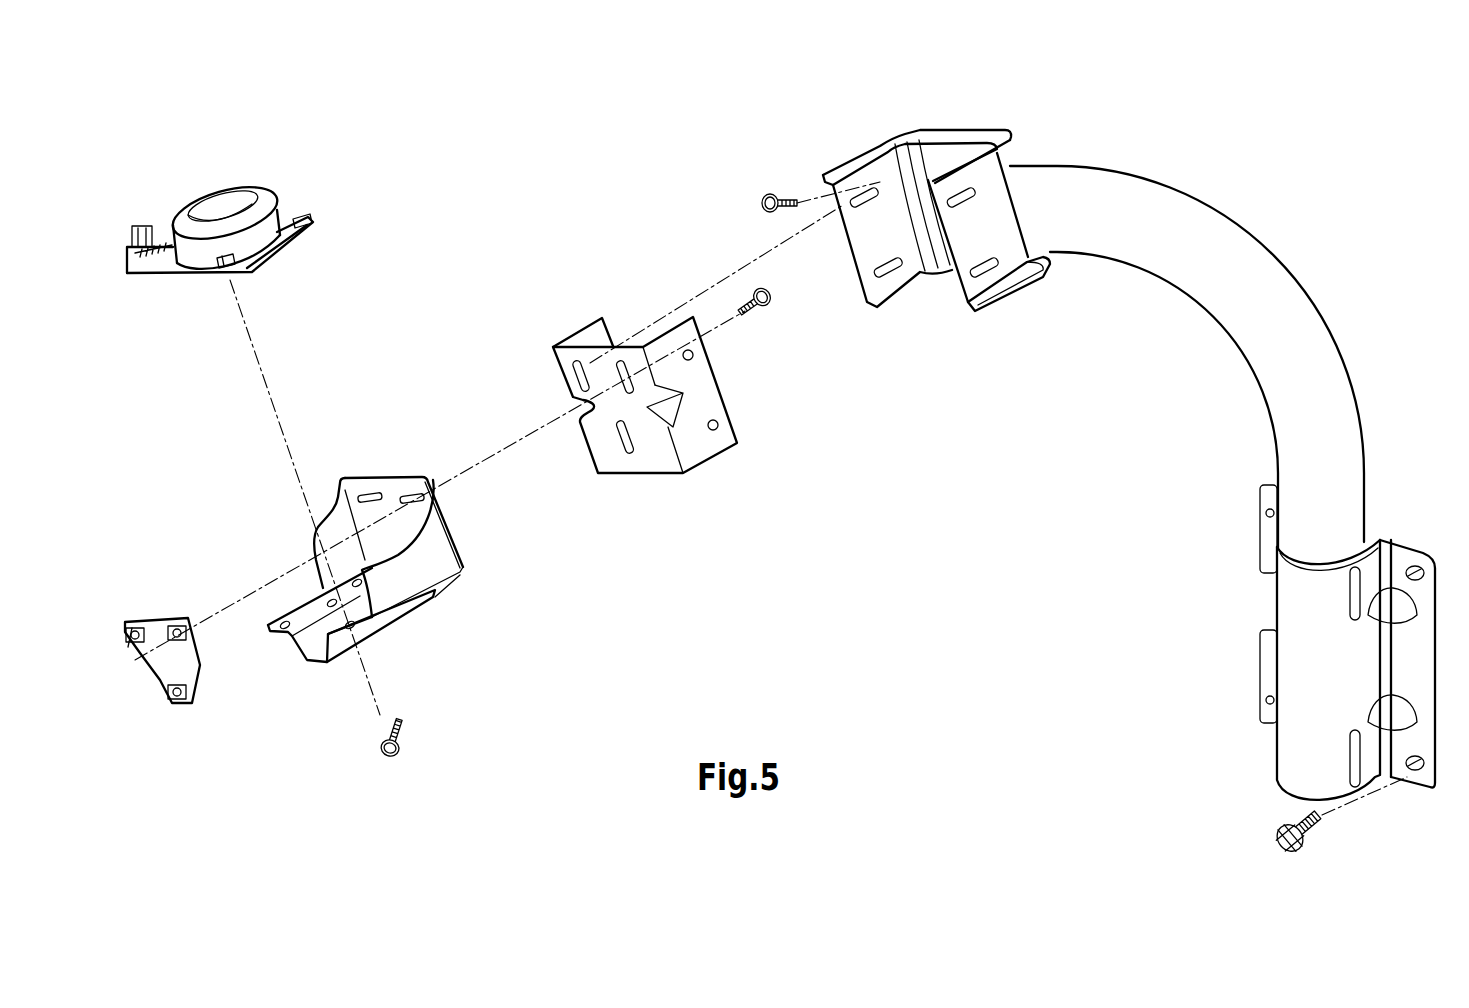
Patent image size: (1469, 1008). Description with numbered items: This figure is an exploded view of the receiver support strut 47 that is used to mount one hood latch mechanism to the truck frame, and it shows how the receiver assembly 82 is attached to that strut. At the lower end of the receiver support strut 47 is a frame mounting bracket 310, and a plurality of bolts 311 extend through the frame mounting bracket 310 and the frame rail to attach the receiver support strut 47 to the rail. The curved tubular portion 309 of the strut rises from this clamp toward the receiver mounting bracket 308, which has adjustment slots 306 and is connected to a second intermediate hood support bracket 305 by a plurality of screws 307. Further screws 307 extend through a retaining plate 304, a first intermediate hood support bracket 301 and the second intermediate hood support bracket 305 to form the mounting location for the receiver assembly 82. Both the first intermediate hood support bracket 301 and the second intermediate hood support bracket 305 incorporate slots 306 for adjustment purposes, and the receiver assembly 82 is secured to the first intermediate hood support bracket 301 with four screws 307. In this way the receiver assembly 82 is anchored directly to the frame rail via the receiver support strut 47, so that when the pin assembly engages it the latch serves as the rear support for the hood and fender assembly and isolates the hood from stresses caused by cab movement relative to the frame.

The receiver support strut 47 is at (1211, 357).
The receiver assembly 82 is at (277, 200).
The first intermediate hood support bracket 301 is at (438, 560).
The retaining plate 304 is at (180, 663).
The second intermediate hood support bracket 305 is at (697, 447).
The adjustment slots 306 is at (387, 496).
The screws 307 is at (787, 193).
The receiver mounting bracket 308 is at (947, 152).
The curved tube 309 is at (1238, 268).
The frame mounting bracket 310 is at (1417, 655).
The bolts 311 is at (1313, 832).